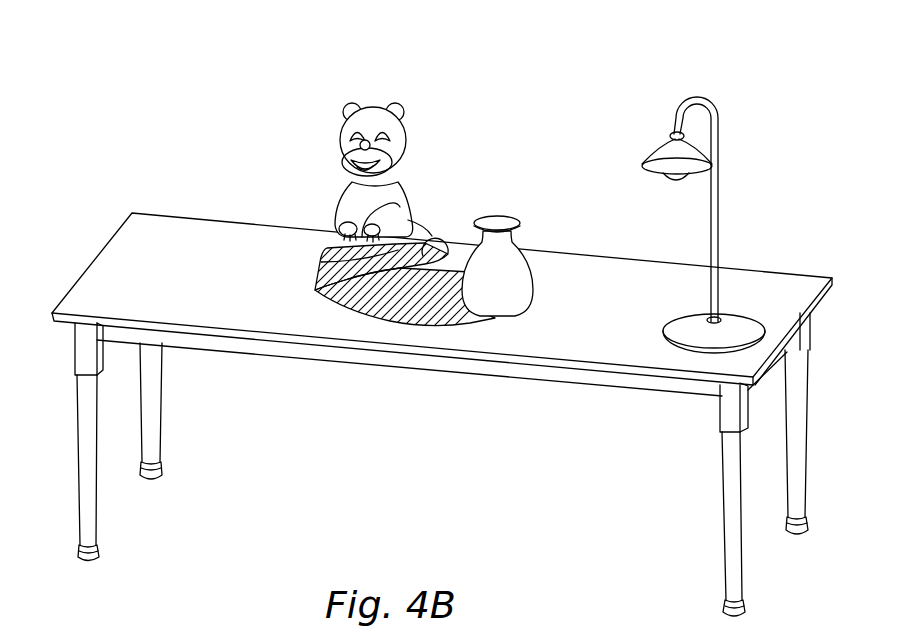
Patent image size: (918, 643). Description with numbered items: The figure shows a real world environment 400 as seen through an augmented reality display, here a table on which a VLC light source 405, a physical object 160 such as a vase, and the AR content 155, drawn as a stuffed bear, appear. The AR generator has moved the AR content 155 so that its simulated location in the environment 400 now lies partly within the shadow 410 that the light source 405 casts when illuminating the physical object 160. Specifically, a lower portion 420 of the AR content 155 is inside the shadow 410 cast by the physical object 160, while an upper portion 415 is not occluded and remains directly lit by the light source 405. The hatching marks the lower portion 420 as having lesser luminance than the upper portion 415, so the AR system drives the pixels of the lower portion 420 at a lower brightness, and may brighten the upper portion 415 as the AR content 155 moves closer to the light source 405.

The real world environment 400 is at (116, 70).
The VLC light source 405 is at (700, 97).
The shadow 410 is at (448, 313).
The lower portion 420 is at (330, 249).
The physical object 160 is at (493, 210).
The AR content 155 is at (373, 115).
The upper portion 415 is at (342, 190).